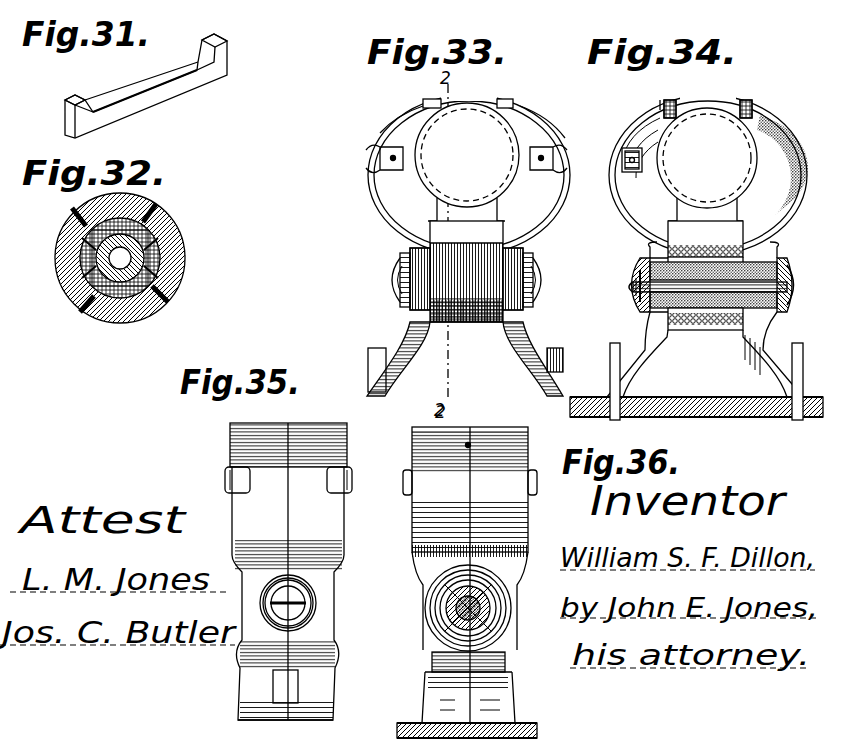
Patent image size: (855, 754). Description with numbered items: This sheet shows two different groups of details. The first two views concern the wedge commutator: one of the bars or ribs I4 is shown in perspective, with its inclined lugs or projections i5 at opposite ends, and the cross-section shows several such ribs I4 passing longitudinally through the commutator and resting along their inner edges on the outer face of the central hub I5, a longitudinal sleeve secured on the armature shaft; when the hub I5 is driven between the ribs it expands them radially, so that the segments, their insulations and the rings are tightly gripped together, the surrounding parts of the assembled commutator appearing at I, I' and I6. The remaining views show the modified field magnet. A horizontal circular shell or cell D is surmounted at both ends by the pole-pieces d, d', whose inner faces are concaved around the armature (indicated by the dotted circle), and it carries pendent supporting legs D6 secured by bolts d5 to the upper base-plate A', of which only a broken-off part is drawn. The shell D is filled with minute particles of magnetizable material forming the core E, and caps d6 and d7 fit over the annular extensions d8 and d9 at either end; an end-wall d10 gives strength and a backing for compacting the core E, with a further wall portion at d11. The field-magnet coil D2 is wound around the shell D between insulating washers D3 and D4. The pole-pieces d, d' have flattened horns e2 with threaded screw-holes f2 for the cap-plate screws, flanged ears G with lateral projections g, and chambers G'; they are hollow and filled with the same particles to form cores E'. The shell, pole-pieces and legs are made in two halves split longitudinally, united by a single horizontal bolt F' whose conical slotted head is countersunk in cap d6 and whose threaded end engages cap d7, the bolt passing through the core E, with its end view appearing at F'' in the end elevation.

In FIG. 31, the bars or ribs I4 is at (155, 98).
In FIG. 32, the bars or ribs I4 is at (144, 257).
In FIG. 31, the inclined lugs or projections i5 is at (222, 50).
In FIG. 32, the outer ring I is at (122, 258).
In FIG. 32, the inner ring I' is at (138, 262).
In FIG. 32, the hub segments I6 is at (80, 247).
In FIG. 32, the central hub I5 is at (87, 282).
In FIG. 33, the pole-piece d is at (460, 175).
In FIG. 34, the pole-piece d is at (706, 175).
In FIG. 35, the pole-piece d is at (288, 593).
In FIG. 36, the pole-piece d is at (470, 492).
In FIG. 33, the pole-piece d' is at (478, 122).
In FIG. 34, the pole-piece d' is at (783, 163).
In FIG. 33, the horns e2 is at (452, 105).
In FIG. 34, the horns e2 is at (684, 110).
In FIG. 35, the horns e2 is at (230, 432).
In FIG. 36, the horns e2 is at (505, 435).
In FIG. 33, the lateral projections or flanges g is at (380, 153).
In FIG. 35, the lateral projections or flanges g is at (225, 483).
In FIG. 36, the lateral projections or flanges g is at (403, 472).
In FIG. 33, the flanged ears G is at (450, 186).
In FIG. 35, the flanged ears G is at (288, 483).
In FIG. 34, the cavity or chamber G' is at (609, 182).
In FIG. 33, the field-magnet coil D2 is at (462, 243).
In FIG. 34, the field-magnet coil D2 is at (713, 247).
In FIG. 36, the field-magnet coil D2 is at (492, 628).
In FIG. 33, the cap d6 is at (400, 260).
In FIG. 34, the cap d6 is at (632, 299).
In FIG. 35, the cap d6 is at (305, 615).
In FIG. 33, the horizontal bolt F' is at (373, 280).
In FIG. 35, the horizontal bolt F' is at (312, 603).
In FIG. 34, the cap F'' is at (593, 303).
In FIG. 36, the cap F'' is at (488, 608).
In FIG. 33, the cap d7 is at (530, 278).
In FIG. 34, the cap d7 is at (790, 300).
In FIG. 33, the insulating washer D3 is at (432, 283).
In FIG. 34, the insulating washer D3 is at (670, 317).
In FIG. 36, the insulating washer D3 is at (437, 575).
In FIG. 33, the insulating washer D4 is at (501, 323).
In FIG. 34, the insulating washer D4 is at (737, 331).
In FIG. 33, the supporting legs D6 is at (541, 367).
In FIG. 34, the supporting legs D6 is at (777, 362).
In FIG. 35, the supporting legs D6 is at (261, 703).
In FIG. 36, the supporting legs D6 is at (453, 697).
In FIG. 34, the cores E' is at (713, 164).
In FIG. 34, the screw-holes f2 is at (670, 100).
In FIG. 36, the screw-holes f2 is at (468, 445).
In FIG. 34, the shell or cell D is at (708, 308).
In FIG. 36, the shell or cell D is at (440, 625).
In FIG. 34, the core E is at (710, 325).
In FIG. 36, the core E is at (438, 608).
In FIG. 34, the flange or annular extension d8 is at (648, 262).
In FIG. 34, the flange or annular extension d9 is at (778, 263).
In FIG. 34, the end-wall d10 is at (630, 284).
In FIG. 34, the washer d11 is at (598, 301).
In FIG. 34, the bolts d5 is at (618, 416).
In FIG. 34, the upper base-plate A' is at (696, 420).
In FIG. 36, the upper base-plate A' is at (485, 726).